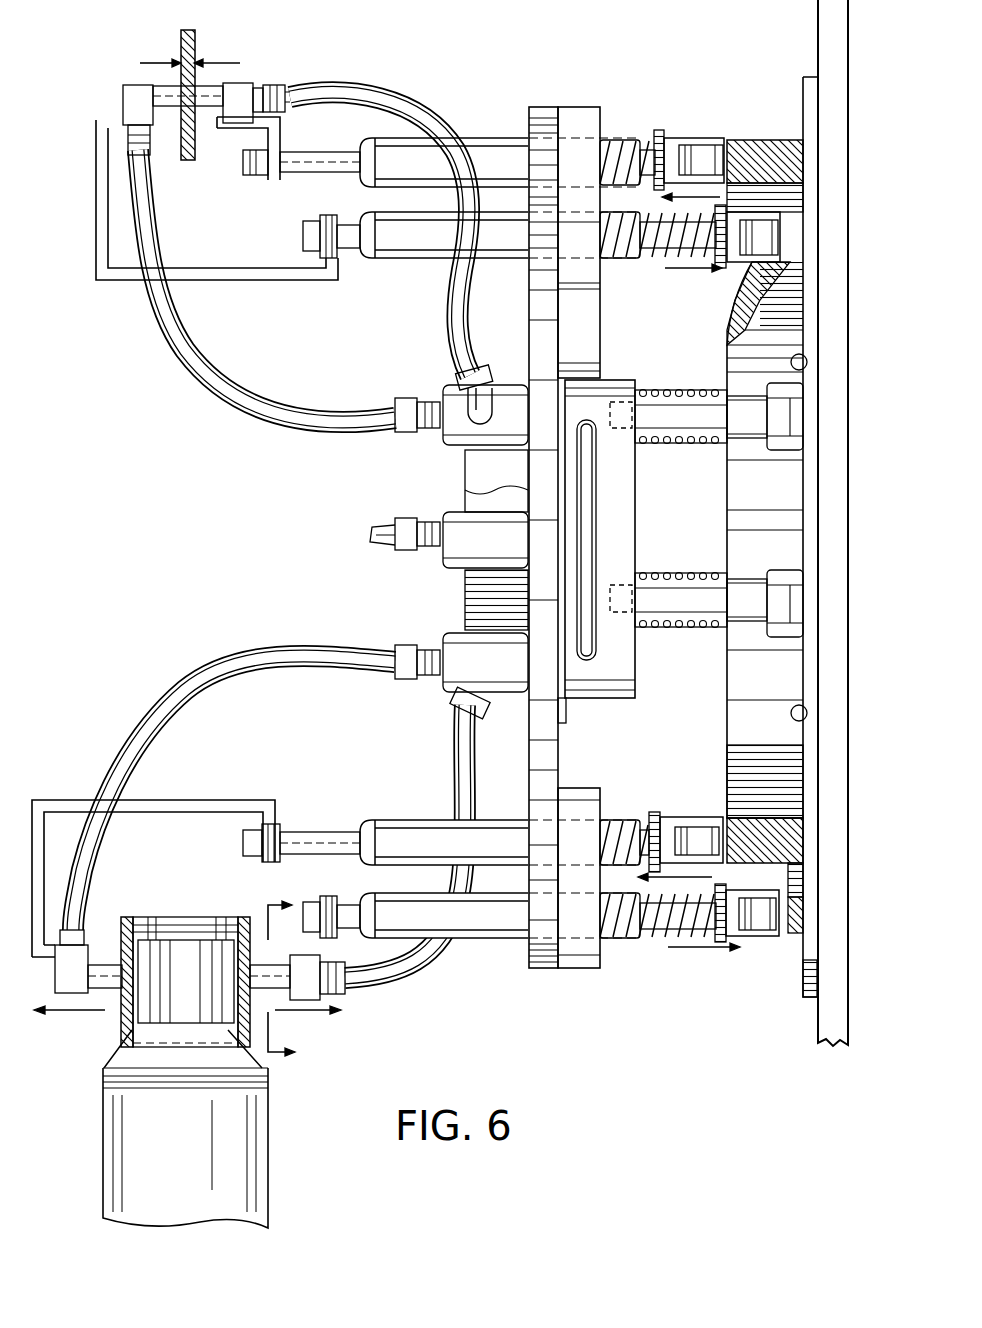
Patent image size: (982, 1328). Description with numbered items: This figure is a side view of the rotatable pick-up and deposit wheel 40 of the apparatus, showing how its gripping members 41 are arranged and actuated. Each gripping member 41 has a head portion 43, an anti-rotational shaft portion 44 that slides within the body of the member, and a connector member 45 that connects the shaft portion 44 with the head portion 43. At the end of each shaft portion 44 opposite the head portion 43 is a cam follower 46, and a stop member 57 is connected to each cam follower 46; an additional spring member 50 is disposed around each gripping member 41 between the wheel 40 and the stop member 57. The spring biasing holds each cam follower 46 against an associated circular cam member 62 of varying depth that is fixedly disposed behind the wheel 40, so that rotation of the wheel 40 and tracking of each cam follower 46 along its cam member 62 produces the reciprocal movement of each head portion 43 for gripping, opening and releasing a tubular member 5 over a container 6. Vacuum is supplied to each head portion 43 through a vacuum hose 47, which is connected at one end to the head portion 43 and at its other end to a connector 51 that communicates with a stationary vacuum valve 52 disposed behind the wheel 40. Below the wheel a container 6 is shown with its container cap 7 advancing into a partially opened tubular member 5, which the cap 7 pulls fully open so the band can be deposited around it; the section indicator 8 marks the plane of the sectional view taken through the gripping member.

The tubular member 5 is at (186, 160).
The container 6 is at (265, 1160).
The container cap 7 is at (190, 965).
The section line 8- 8 is at (284, 979).
The pick-up and deposit wheel 40 is at (548, 110).
The gripping member 41 is at (485, 200).
The head portion 43 is at (213, 100).
The anti-rotational shaft portion 44 is at (334, 158).
The connector member 45 is at (226, 280).
The cam follower 46 is at (690, 150).
The vacuum hose 47 is at (450, 358).
The spring member 50 is at (622, 136).
The connector 51 is at (470, 655).
The vacuum valve 52 is at (600, 695).
The stop member 57 is at (662, 130).
The cam member 62 is at (761, 142).